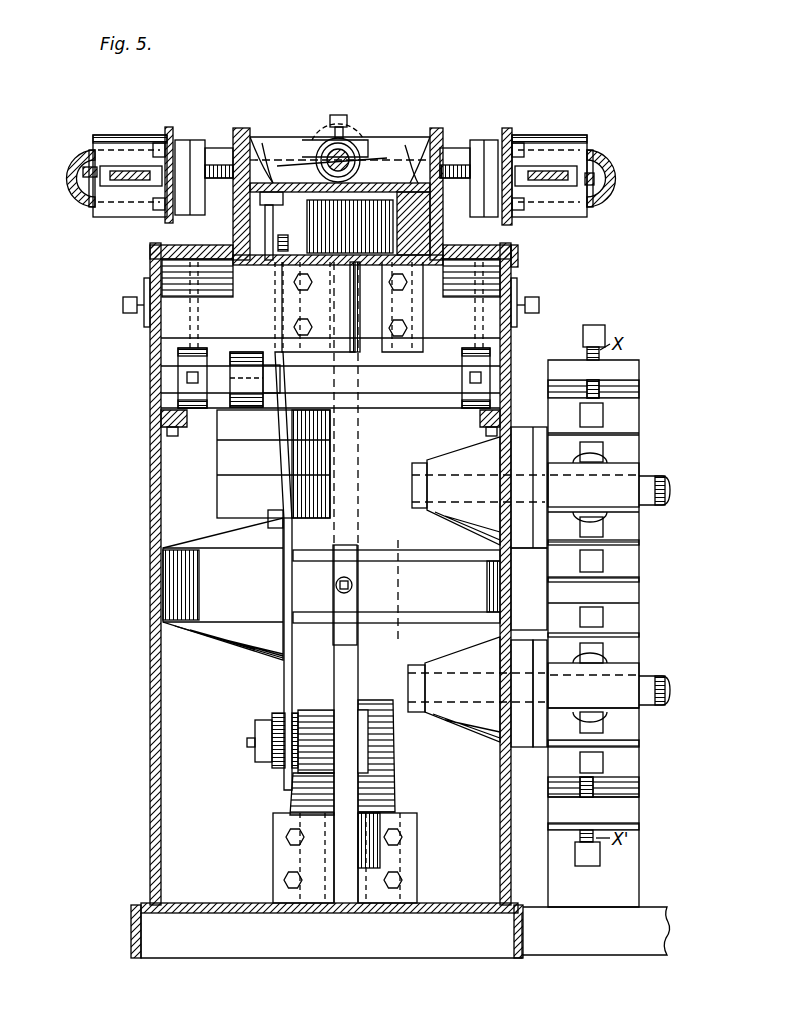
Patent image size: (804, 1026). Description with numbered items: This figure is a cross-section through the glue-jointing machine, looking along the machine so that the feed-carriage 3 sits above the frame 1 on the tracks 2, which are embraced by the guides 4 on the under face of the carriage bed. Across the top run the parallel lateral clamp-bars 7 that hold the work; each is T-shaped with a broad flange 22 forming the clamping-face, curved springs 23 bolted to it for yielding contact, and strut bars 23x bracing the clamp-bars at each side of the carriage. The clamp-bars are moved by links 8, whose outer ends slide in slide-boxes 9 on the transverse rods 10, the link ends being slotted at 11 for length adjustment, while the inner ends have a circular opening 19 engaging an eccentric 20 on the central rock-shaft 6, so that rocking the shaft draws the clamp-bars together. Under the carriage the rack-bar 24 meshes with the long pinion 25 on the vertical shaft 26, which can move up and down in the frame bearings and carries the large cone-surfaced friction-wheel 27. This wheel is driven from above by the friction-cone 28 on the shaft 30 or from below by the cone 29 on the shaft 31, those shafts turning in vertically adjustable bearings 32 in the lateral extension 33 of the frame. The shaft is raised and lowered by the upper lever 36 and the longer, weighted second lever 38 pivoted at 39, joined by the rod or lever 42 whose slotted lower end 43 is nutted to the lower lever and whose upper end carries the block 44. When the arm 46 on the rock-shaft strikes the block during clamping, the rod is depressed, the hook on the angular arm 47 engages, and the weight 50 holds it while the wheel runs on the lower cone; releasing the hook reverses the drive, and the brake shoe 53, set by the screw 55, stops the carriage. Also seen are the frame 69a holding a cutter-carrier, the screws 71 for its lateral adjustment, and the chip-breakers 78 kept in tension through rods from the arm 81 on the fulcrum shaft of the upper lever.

The frame 1 is at (513, 360).
The tracks 2 is at (242, 243).
The feed-carriage 3 is at (392, 128).
The guides 4 is at (225, 247).
The rock-shaft 6 is at (355, 143).
The clamp-bars 7 is at (138, 186).
The links 8 is at (67, 178).
The slide-boxes 9 is at (132, 135).
The transverse rods 10 is at (218, 145).
The slot 11 is at (90, 152).
The circular opening 19 is at (333, 115).
The eccentric 20 is at (343, 130).
The flange 22 is at (172, 140).
The curved springs 23 is at (195, 140).
The strut bars 23x is at (92, 207).
The rack-bar 24 is at (430, 205).
The pinion 25 is at (307, 222).
The vertical shaft 26 is at (358, 420).
The friction-wheel 27 is at (223, 589).
The upper friction-cone 28 is at (478, 491).
The lower friction-cone 29 is at (476, 689).
The upper shaft 30 is at (660, 475).
The lower shaft 31 is at (660, 675).
The bearings 32 is at (593, 587).
The lateral extension 33 is at (655, 906).
The upper lever 36 is at (245, 352).
The second lever 38 is at (395, 735).
The pivot 39 is at (395, 780).
The rod or lever 42 is at (280, 423).
The slotted lower end 43 is at (278, 770).
The block 44 is at (283, 199).
The arm 46 is at (275, 142).
The angular arm 47 is at (288, 243).
The weight 50 is at (273, 464).
The brake shoe 53 is at (357, 553).
The screw 55 is at (352, 585).
The frame 69a is at (144, 288).
The screws 71 is at (123, 305).
The chip-breakers 78 is at (162, 262).
The arm 81 is at (195, 357).